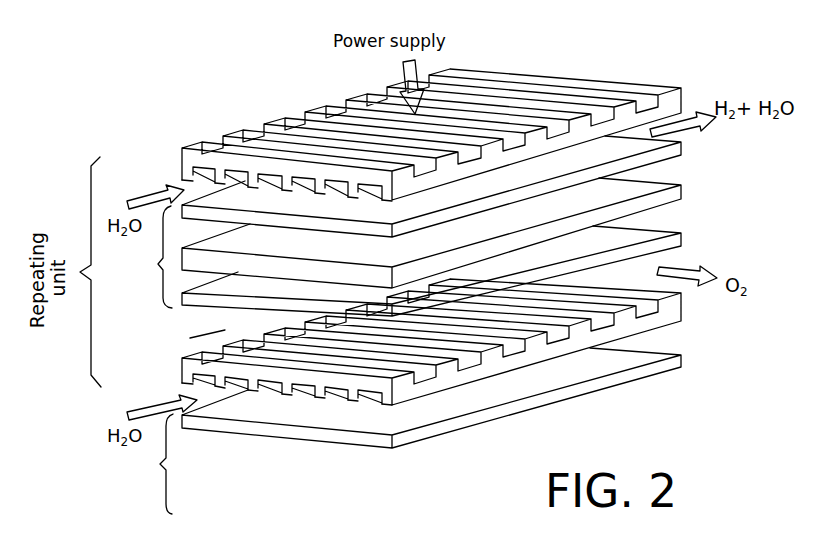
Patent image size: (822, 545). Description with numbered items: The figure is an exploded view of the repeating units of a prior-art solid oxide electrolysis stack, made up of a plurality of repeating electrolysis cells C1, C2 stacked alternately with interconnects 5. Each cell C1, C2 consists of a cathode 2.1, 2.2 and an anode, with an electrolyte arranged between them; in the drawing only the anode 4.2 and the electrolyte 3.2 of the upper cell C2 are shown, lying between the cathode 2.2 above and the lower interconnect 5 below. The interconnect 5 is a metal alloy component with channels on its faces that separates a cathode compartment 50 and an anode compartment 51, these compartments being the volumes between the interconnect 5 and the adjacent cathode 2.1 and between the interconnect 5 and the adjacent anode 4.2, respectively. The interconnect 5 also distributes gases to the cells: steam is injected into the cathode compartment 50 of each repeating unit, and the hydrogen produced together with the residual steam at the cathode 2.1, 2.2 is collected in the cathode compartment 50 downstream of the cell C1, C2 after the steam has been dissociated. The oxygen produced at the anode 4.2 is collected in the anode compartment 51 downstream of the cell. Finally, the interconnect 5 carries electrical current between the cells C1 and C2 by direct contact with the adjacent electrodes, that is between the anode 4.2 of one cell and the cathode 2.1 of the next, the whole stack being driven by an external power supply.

The interconnect 5 is at (182, 150).
The cathode compartment 50 is at (198, 187).
The anode compartment 51 is at (190, 338).
The cathode 2.1 is at (681, 357).
The cathode 2.2 is at (681, 145).
The electrolyte 3.2 is at (681, 188).
The anode 4.2 is at (681, 234).
The electrolysis cell C1 is at (151, 464).
The electrolysis cell C2 is at (147, 257).